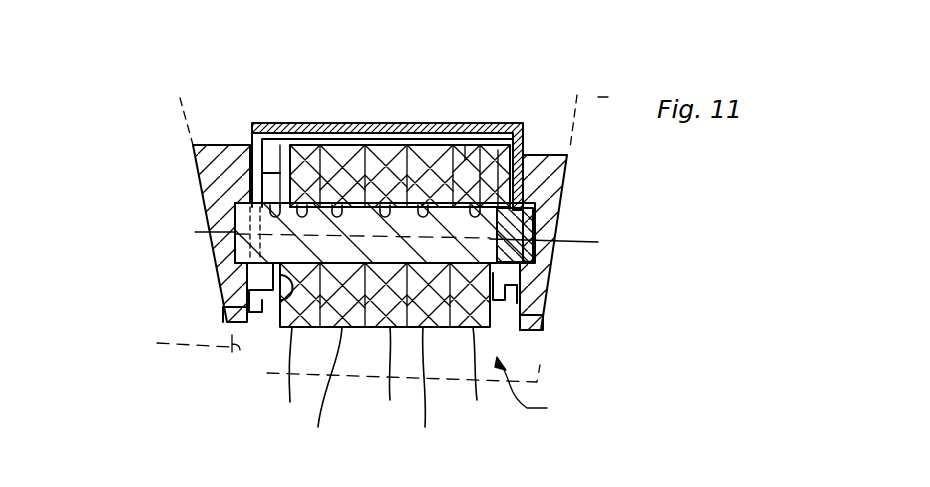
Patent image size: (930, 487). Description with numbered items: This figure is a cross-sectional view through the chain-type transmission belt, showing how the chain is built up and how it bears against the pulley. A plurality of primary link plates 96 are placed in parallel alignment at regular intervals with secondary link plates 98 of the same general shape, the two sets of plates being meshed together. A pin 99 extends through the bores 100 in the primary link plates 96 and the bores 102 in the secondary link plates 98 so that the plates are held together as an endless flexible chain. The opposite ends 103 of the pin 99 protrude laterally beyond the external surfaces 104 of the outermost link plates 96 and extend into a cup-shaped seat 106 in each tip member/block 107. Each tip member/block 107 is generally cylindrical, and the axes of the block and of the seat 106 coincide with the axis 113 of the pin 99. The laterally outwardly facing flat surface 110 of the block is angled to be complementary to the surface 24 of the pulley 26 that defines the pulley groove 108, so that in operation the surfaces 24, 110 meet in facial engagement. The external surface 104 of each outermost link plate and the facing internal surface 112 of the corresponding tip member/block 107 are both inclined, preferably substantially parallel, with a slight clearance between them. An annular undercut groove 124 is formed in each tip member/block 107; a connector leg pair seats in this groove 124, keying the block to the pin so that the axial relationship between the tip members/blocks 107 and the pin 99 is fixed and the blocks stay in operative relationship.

The surface of the pulley 24 is at (384, 231).
The pulley 26 is at (118, 257).
The primary link plates 96 is at (366, 343).
The secondary link plates 98 is at (396, 358).
The pin 99 is at (465, 140).
The bores 100 is at (305, 150).
The bores 102 is at (339, 127).
The opposite ends of the pin 103 is at (245, 218).
The external surface 104 is at (257, 373).
The cup-shaped seat 106 is at (274, 205).
The tip member/block 107 is at (210, 166).
The pulley groove 108 is at (548, 392).
The flat surface 110 is at (553, 253).
The internal surface 112 is at (265, 310).
The axis of the pin 113 is at (587, 237).
The annular undercut groove 124 is at (247, 288).